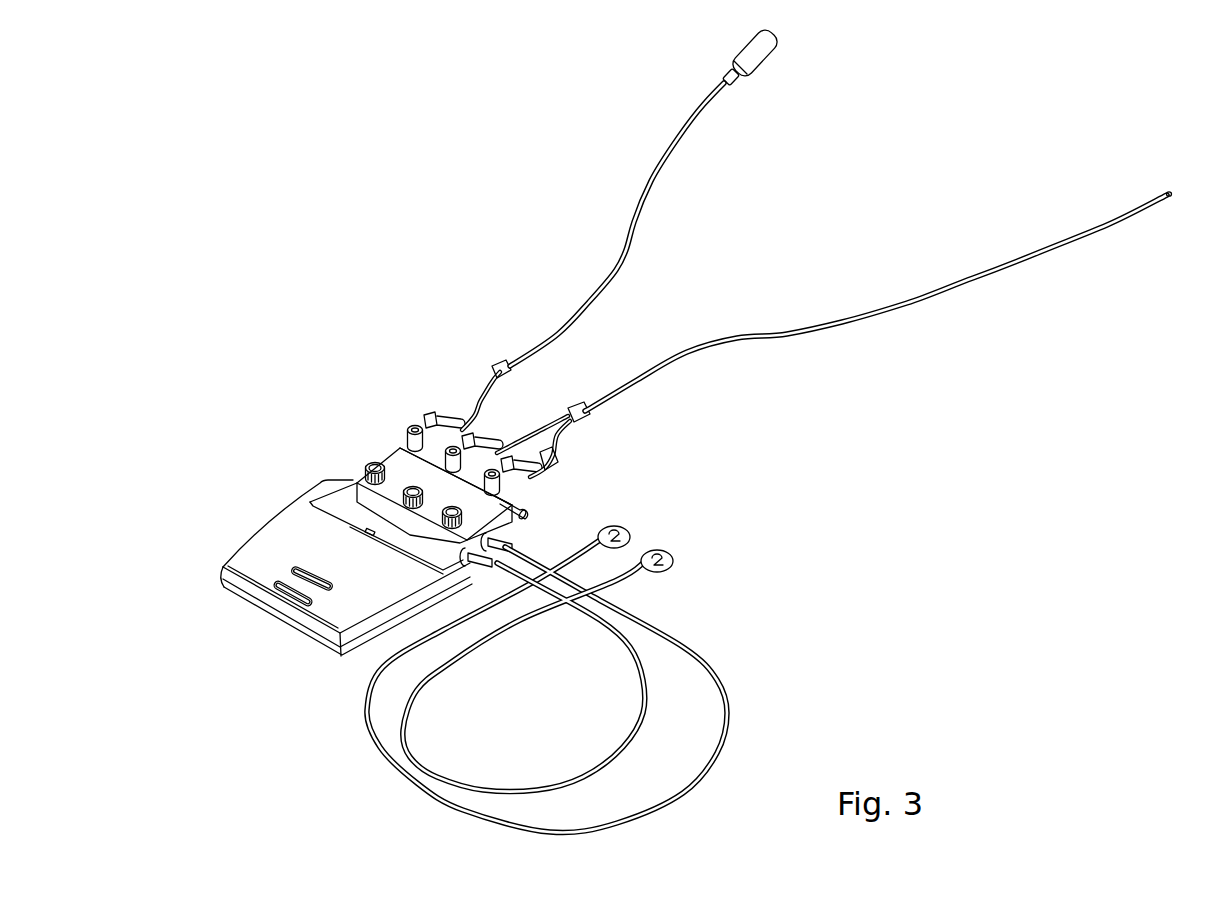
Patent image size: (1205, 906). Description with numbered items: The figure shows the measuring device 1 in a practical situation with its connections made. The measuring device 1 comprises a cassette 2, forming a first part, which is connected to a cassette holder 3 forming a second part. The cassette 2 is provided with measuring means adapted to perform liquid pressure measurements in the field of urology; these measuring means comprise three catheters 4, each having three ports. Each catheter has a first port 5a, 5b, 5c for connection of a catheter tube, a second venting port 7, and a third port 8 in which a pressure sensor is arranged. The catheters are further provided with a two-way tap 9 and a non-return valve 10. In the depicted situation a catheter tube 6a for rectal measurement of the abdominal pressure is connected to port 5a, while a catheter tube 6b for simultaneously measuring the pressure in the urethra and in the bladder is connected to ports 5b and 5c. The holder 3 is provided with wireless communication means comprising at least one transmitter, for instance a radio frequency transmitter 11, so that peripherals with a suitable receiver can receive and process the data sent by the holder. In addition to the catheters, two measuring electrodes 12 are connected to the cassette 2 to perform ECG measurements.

The measuring device 1 is at (325, 205).
The cassette 2 is at (382, 505).
The cassette holder 3 is at (363, 582).
The catheter 4 is at (596, 290).
The first port 5a is at (417, 425).
The first port 5b is at (457, 437).
The first port 5c is at (520, 490).
The catheter tube 6a is at (477, 395).
The catheter tube 6b is at (585, 423).
The second venting port 7 is at (415, 457).
The third port 8 is at (407, 453).
The two-way tap 9 is at (400, 448).
The non-return valve 10 is at (355, 483).
The radio frequency transmitter 11 is at (323, 553).
The measuring electrode 12 is at (630, 541).